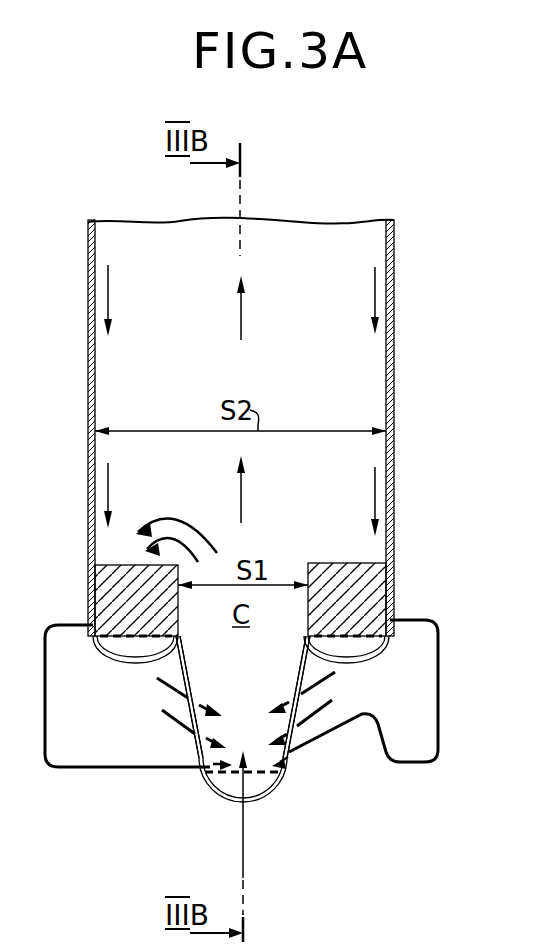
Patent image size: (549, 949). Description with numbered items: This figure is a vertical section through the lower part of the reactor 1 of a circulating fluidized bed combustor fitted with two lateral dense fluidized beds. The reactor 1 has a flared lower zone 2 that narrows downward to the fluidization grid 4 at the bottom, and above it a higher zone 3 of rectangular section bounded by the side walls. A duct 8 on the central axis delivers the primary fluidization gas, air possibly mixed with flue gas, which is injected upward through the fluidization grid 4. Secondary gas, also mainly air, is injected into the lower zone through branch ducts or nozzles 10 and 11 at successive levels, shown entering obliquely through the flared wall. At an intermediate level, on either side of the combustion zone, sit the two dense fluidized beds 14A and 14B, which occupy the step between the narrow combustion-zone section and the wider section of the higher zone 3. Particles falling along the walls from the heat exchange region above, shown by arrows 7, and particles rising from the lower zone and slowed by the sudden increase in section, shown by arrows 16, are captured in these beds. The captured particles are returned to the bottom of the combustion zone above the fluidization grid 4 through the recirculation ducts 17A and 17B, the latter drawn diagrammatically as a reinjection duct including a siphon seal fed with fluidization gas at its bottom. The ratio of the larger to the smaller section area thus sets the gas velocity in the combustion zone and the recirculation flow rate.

The reactor 1 is at (407, 404).
The flared lower zone 2 is at (197, 743).
The higher zone 3 is at (394, 290).
The fluidization grid 4 is at (213, 795).
The arrows (particles falling along the wall) 7 is at (108, 496).
The duct 8 is at (243, 845).
The branch duct or nozzle 10 is at (332, 700).
The branch duct or nozzle 11 is at (335, 672).
The dense fluidized bed 14A is at (128, 592).
The dense fluidized bed 14B is at (355, 590).
The arrows (particles rising from lower zone) 16 is at (185, 540).
The recirculation duct 17A is at (45, 705).
The recirculation duct 17B is at (438, 680).